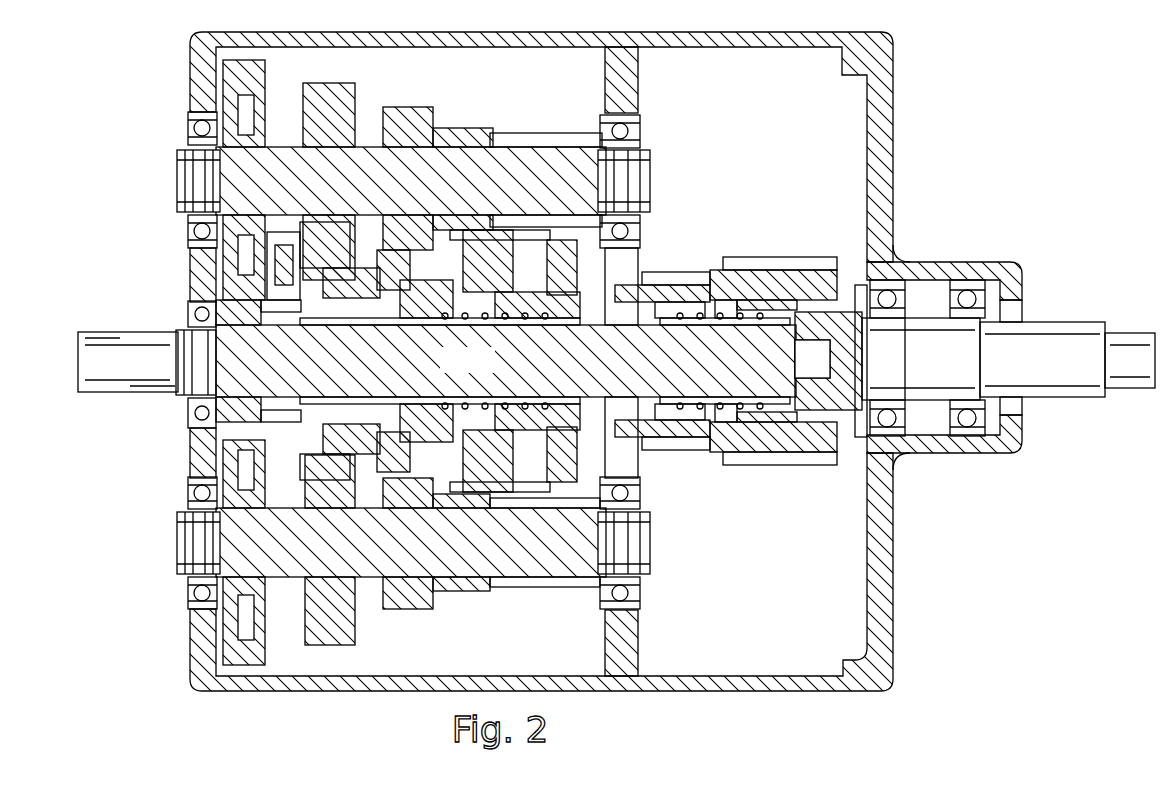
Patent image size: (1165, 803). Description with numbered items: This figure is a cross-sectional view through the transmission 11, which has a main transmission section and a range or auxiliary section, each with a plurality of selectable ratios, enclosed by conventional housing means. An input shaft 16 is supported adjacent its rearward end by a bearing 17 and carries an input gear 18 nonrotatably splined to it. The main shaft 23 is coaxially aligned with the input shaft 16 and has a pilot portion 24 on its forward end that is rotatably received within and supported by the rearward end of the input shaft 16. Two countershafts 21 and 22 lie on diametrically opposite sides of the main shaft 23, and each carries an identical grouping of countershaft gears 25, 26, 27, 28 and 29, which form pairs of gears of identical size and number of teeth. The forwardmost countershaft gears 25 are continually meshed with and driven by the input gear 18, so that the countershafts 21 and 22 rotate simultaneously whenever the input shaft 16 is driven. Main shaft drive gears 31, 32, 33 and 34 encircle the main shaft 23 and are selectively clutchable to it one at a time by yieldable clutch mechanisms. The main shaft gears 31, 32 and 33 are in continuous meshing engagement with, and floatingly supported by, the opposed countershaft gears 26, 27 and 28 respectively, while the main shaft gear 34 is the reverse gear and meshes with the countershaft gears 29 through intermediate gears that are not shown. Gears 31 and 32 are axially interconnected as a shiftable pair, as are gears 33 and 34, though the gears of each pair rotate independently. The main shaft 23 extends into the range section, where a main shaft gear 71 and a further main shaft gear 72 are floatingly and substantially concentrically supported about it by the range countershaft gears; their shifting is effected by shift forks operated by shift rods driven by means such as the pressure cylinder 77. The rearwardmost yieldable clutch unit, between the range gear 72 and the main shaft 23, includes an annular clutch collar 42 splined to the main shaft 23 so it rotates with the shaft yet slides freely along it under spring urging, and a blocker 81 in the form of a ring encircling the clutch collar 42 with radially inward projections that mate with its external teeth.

The transmission 11 is at (152, 46).
The input shaft 16 is at (123, 343).
The bearing 17 is at (186, 313).
The input gear 18 is at (247, 300).
The countershaft 21 is at (240, 188).
The countershaft 22 is at (243, 541).
The main shaft 23 is at (523, 361).
The pilot portion 24 is at (243, 362).
The countershaft gear 25 is at (242, 662).
The countershaft gear 26 is at (330, 637).
The countershaft gear 27 is at (400, 610).
The countershaft gear 28 is at (470, 590).
The countershaft gear 29 is at (540, 583).
The main shaft gear 31 is at (328, 277).
The main shaft gear 32 is at (392, 252).
The main shaft gear 33 is at (473, 228).
The main shaft gear 34 is at (558, 240).
The clutch collar 42 is at (730, 303).
The main shaft gear 71 is at (698, 272).
The main shaft gear 72 is at (805, 258).
The pressure cylinder 77 is at (1078, 330).
The blocker 81 is at (735, 300).